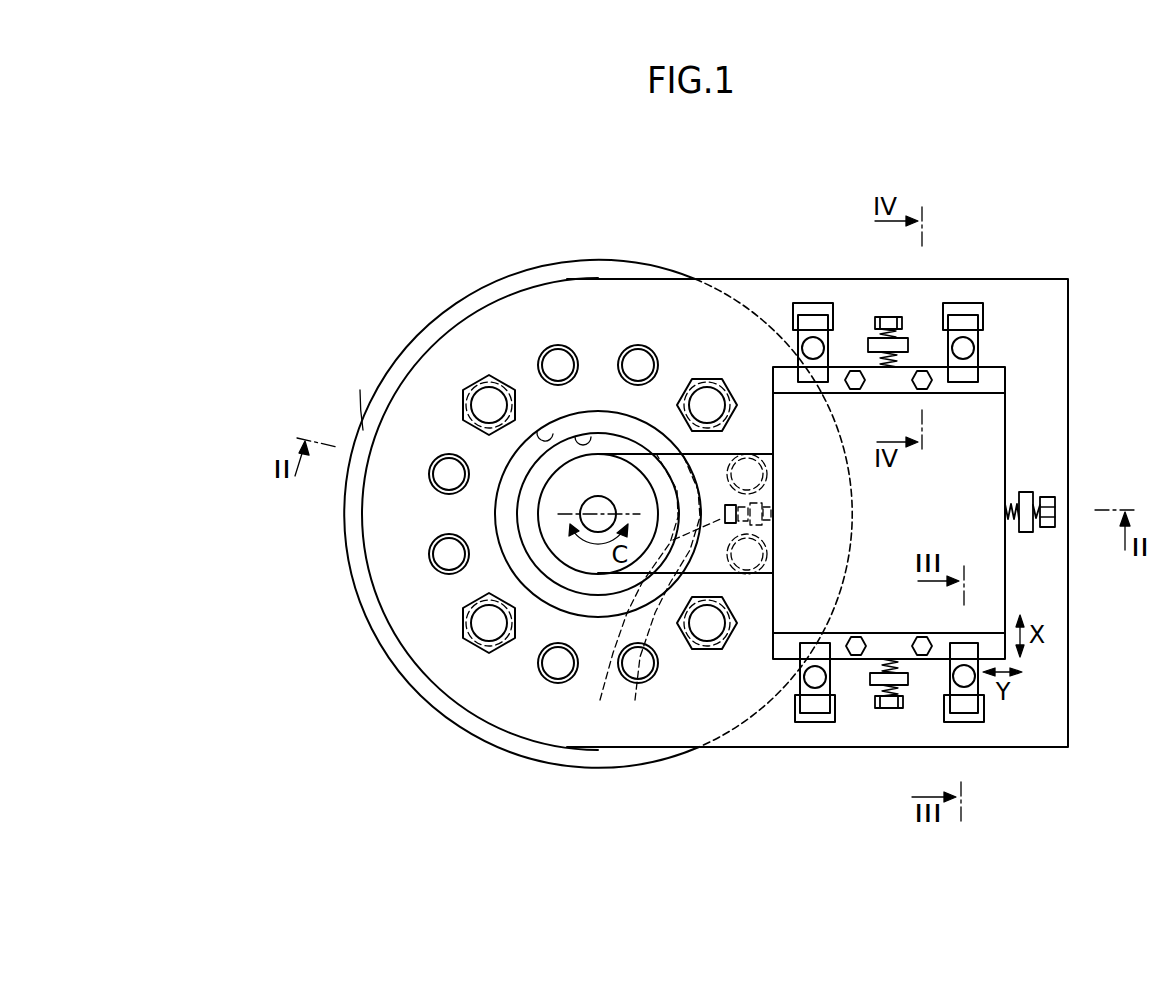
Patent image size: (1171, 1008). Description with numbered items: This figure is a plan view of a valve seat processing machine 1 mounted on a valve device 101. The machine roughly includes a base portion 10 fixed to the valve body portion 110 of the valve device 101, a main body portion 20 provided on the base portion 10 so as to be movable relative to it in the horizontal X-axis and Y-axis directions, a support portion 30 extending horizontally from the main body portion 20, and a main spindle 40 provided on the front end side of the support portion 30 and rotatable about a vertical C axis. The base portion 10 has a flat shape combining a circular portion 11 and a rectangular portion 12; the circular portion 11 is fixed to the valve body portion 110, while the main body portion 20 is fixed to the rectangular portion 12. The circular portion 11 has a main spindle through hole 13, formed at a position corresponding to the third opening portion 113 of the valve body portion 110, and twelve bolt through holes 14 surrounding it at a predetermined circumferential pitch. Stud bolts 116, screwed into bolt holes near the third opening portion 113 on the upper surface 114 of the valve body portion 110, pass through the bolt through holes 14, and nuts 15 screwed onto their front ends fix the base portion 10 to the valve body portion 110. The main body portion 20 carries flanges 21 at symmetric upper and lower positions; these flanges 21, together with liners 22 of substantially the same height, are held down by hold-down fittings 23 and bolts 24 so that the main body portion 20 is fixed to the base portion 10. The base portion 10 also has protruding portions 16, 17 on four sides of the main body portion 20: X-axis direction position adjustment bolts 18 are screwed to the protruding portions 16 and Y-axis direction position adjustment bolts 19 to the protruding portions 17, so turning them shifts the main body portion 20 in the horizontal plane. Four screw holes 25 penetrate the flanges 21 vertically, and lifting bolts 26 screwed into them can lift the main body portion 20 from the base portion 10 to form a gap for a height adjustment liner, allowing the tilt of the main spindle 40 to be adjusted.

The valve seat processing machine 1 is at (808, 168).
The base portion 10 is at (850, 465).
The circular portion 11 is at (470, 313).
The rectangular portion 12 is at (1066, 279).
The main spindle through hole 13 is at (488, 376).
The bolt through holes 14 is at (466, 400).
The nuts 15 is at (482, 388).
The protruding portions 16 is at (928, 368).
The protruding portions 17 is at (1026, 494).
The X-axis direction position adjustment bolts 18 is at (888, 316).
The Y-axis direction position adjustment bolts 19 is at (1050, 502).
The main body portion 20 is at (1005, 432).
The flanges 21 is at (995, 378).
The liners 22 is at (813, 303).
The hold-down fittings 23 is at (815, 337).
The bolts 24 is at (856, 371).
The screw holes 25 is at (914, 517).
The lifting bolts 26 is at (858, 302).
The support portion 30 is at (660, 452).
The main spindle 40 is at (598, 497).
The valve device 101 is at (365, 389).
The valve body portion 110 is at (517, 514).
The third opening portion 113 is at (593, 437).
The upper surface 114 is at (378, 410).
The stud bolts 116 is at (474, 396).